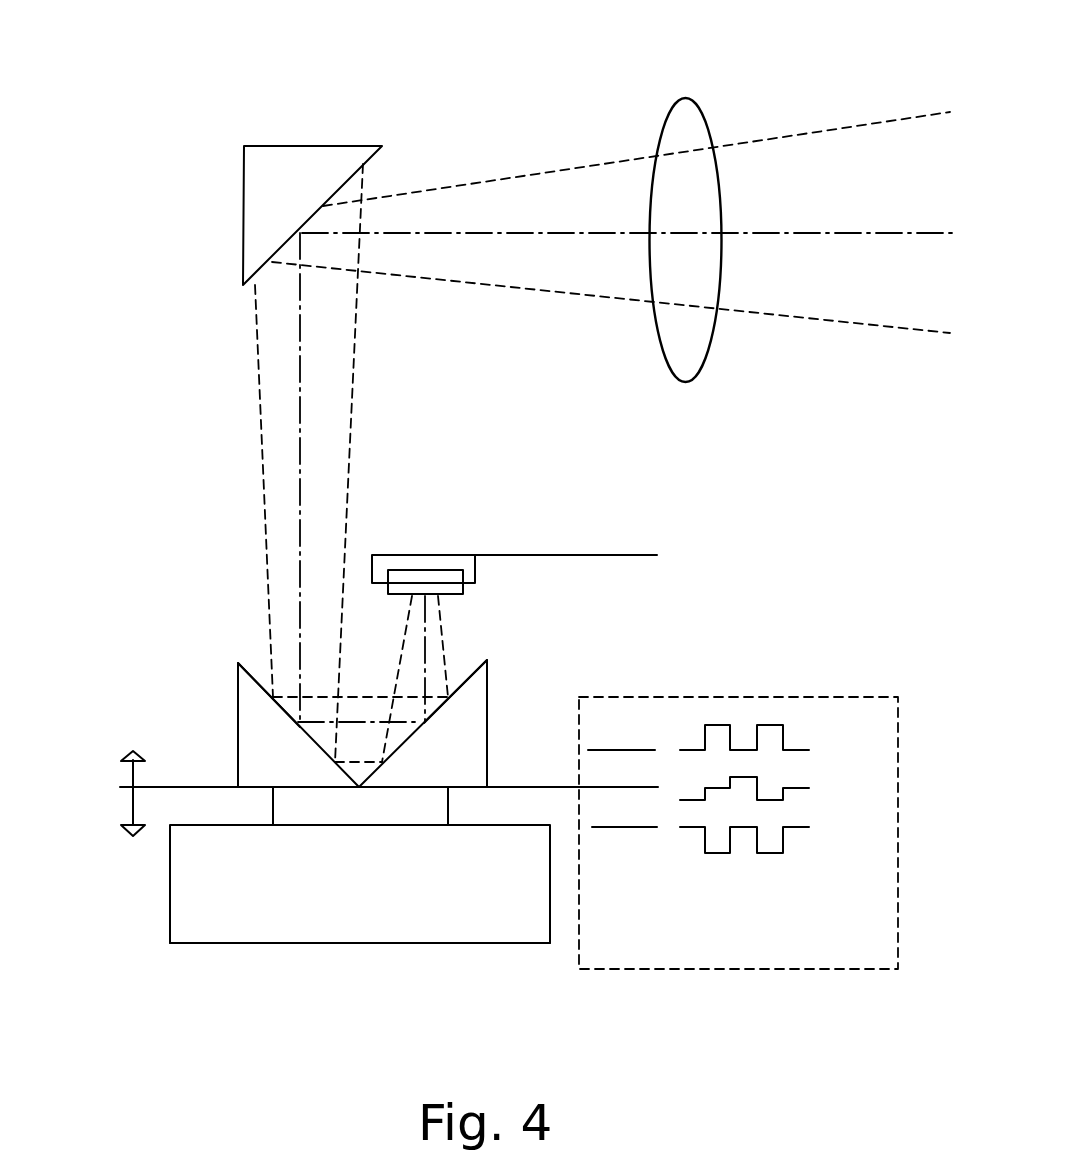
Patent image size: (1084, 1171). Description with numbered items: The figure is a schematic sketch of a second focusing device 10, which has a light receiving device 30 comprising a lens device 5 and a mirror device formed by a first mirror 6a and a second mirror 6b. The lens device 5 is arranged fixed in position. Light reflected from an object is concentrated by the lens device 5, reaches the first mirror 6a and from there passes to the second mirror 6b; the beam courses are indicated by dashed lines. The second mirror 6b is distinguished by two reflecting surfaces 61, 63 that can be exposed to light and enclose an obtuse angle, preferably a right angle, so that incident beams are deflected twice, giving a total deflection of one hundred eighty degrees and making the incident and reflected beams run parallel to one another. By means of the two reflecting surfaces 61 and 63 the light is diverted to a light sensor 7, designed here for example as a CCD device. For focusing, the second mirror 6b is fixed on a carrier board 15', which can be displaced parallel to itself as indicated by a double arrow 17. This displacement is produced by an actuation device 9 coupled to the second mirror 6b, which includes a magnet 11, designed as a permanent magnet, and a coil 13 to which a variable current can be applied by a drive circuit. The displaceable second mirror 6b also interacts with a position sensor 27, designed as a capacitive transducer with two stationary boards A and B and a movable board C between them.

The lens device 5 is at (673, 122).
The first mirror 6a is at (241, 206).
The second mirror 6b is at (238, 708).
The light sensor 7 is at (425, 555).
The actuation device 9 is at (166, 896).
The focusing device 10 is at (448, 433).
The magnet 11 is at (268, 928).
The coil 13 is at (449, 803).
The carrier board 15' is at (389, 744).
The double arrow 17 is at (124, 769).
The position sensor 27 is at (769, 694).
The light receiving device 30 is at (195, 487).
The reflecting surface 61 is at (240, 662).
The reflecting surface 63 is at (468, 667).